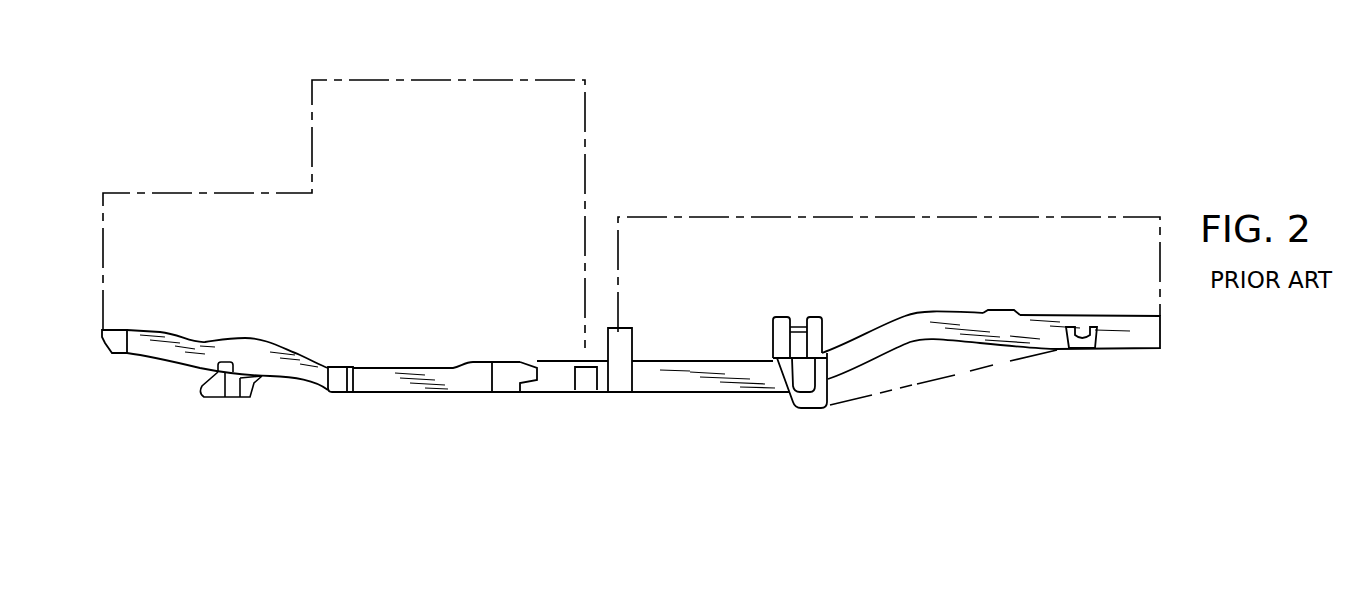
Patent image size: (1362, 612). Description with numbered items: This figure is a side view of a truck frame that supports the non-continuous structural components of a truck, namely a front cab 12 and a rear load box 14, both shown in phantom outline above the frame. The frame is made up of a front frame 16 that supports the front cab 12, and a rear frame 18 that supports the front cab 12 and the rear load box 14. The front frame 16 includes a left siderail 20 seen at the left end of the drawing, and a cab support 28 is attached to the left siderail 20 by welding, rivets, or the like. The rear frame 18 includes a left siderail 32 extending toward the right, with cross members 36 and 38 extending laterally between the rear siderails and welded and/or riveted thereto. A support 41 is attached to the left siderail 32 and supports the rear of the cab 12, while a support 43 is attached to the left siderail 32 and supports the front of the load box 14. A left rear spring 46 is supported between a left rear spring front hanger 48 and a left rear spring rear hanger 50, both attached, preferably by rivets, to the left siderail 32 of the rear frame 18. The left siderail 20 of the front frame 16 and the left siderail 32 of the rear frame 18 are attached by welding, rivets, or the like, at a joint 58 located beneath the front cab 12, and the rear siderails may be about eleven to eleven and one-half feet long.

The front cab 12 is at (470, 79).
The rear load box 14 is at (953, 216).
The front frame 16 is at (368, 400).
The rear frame 18 is at (922, 392).
The left siderail 20 is at (447, 368).
The cab support 28 is at (334, 380).
The left siderail 32 is at (702, 373).
The cross member 36 is at (821, 317).
The cross member 38 is at (1002, 311).
The support 41 is at (580, 366).
The support 43 is at (630, 328).
The left rear spring 46 is at (943, 377).
The left rear spring front hanger 48 is at (814, 408).
The left rear spring rear hanger 50 is at (1083, 348).
The joint 58 is at (505, 368).